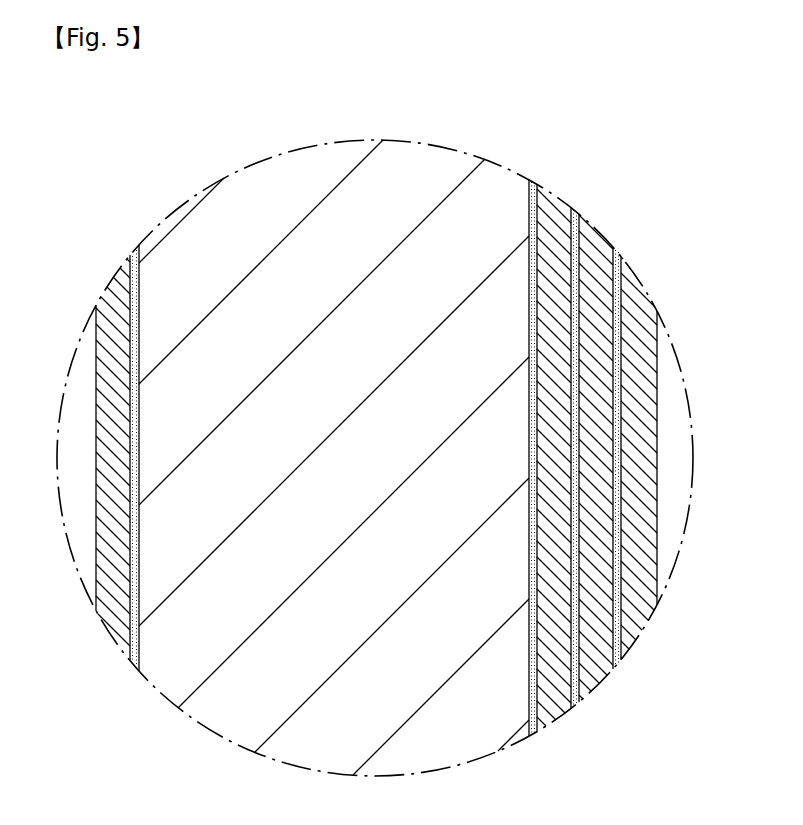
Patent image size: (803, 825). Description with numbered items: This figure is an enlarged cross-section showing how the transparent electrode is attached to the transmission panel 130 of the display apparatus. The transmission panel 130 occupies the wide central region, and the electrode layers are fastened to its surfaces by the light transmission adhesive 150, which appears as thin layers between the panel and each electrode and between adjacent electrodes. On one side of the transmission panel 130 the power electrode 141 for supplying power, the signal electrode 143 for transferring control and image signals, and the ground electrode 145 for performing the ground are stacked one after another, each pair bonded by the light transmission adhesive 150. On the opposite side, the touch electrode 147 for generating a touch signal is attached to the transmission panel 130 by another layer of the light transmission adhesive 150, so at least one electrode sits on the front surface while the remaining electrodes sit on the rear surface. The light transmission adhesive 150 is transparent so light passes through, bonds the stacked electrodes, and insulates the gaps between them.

The transmission panel 130 is at (353, 213).
The power electrode 141 is at (553, 223).
The signal electrode 143 is at (595, 245).
The ground electrode 145 is at (633, 295).
The touch electrode 147 is at (117, 293).
The light transmission adhesive 150 is at (133, 262).